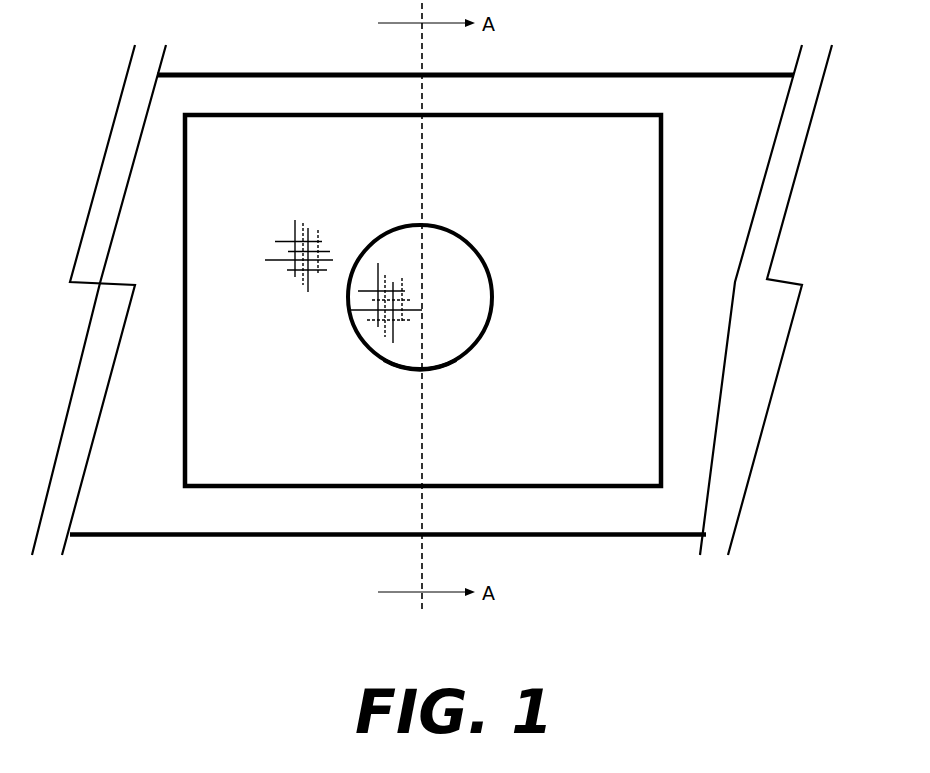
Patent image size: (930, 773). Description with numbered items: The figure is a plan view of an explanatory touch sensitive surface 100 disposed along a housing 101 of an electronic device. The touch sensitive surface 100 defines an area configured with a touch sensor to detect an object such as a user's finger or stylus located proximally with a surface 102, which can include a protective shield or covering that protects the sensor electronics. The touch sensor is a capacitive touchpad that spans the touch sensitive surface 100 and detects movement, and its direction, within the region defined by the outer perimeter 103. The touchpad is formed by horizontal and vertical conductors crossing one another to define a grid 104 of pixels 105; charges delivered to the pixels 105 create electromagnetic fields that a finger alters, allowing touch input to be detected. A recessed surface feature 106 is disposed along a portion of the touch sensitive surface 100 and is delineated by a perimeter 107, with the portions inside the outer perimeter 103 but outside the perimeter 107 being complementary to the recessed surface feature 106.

The touch sensitive surface 100 is at (618, 232).
The housing 101 is at (565, 512).
The surface 102 is at (308, 412).
The outer perimeter 103 is at (662, 305).
The grid 104 is at (366, 273).
The pixels 105 is at (290, 260).
The recessed surface feature 106 is at (465, 317).
The perimeter 107 is at (407, 370).